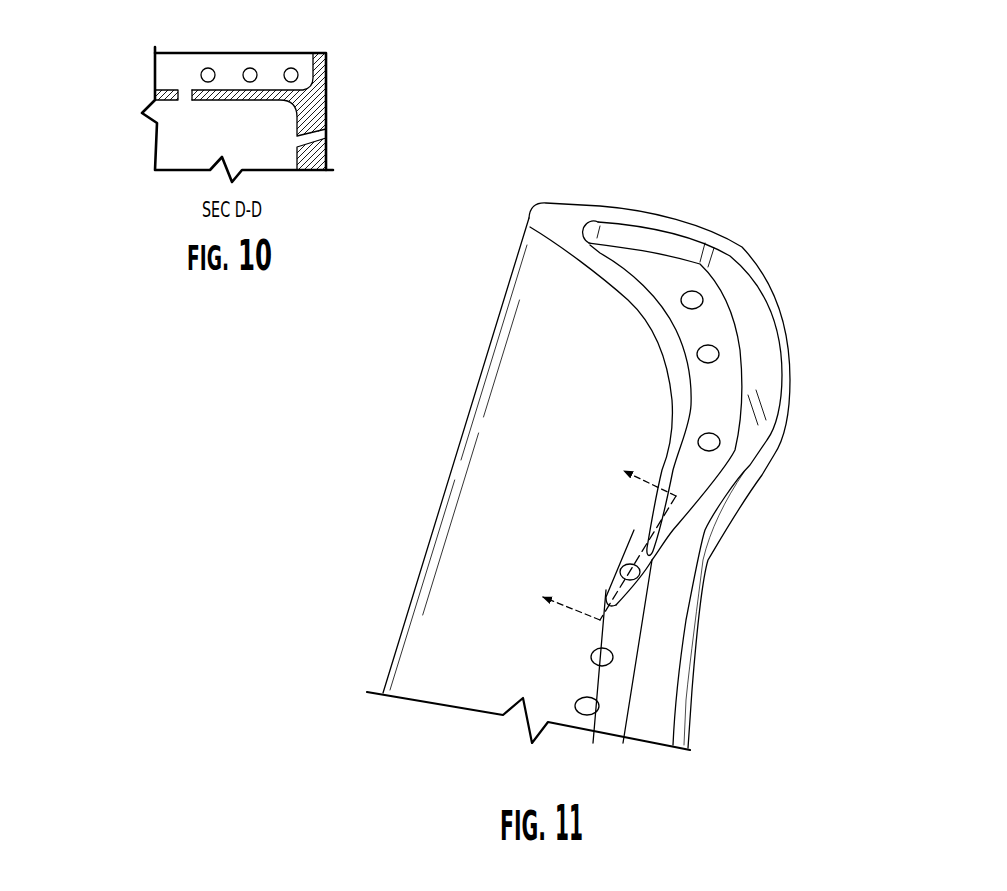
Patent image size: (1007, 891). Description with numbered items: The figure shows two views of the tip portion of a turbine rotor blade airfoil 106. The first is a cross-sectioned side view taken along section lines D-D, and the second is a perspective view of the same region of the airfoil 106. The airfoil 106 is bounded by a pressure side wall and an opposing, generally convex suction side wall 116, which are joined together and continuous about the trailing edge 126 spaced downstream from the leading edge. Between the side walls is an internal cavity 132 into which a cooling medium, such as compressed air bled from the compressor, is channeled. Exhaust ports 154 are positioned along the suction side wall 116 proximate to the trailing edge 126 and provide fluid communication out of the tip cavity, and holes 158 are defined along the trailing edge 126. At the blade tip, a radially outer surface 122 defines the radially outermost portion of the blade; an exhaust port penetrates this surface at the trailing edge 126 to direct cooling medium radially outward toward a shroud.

In FIG. 10, the airfoil 106 is at (364, 77).
In FIG. 11, the airfoil 106 is at (812, 318).
In FIG. 10, the suction side wall 116 is at (294, 62).
In FIG. 11, the radially outer surface 122 is at (645, 584).
In FIG. 11, the trailing edge 126 is at (572, 675).
In FIG. 10, the internal cavity 132 is at (252, 147).
In FIG. 10, the exhaust ports 154 is at (199, 73).
In FIG. 10, the holes 158 is at (318, 133).